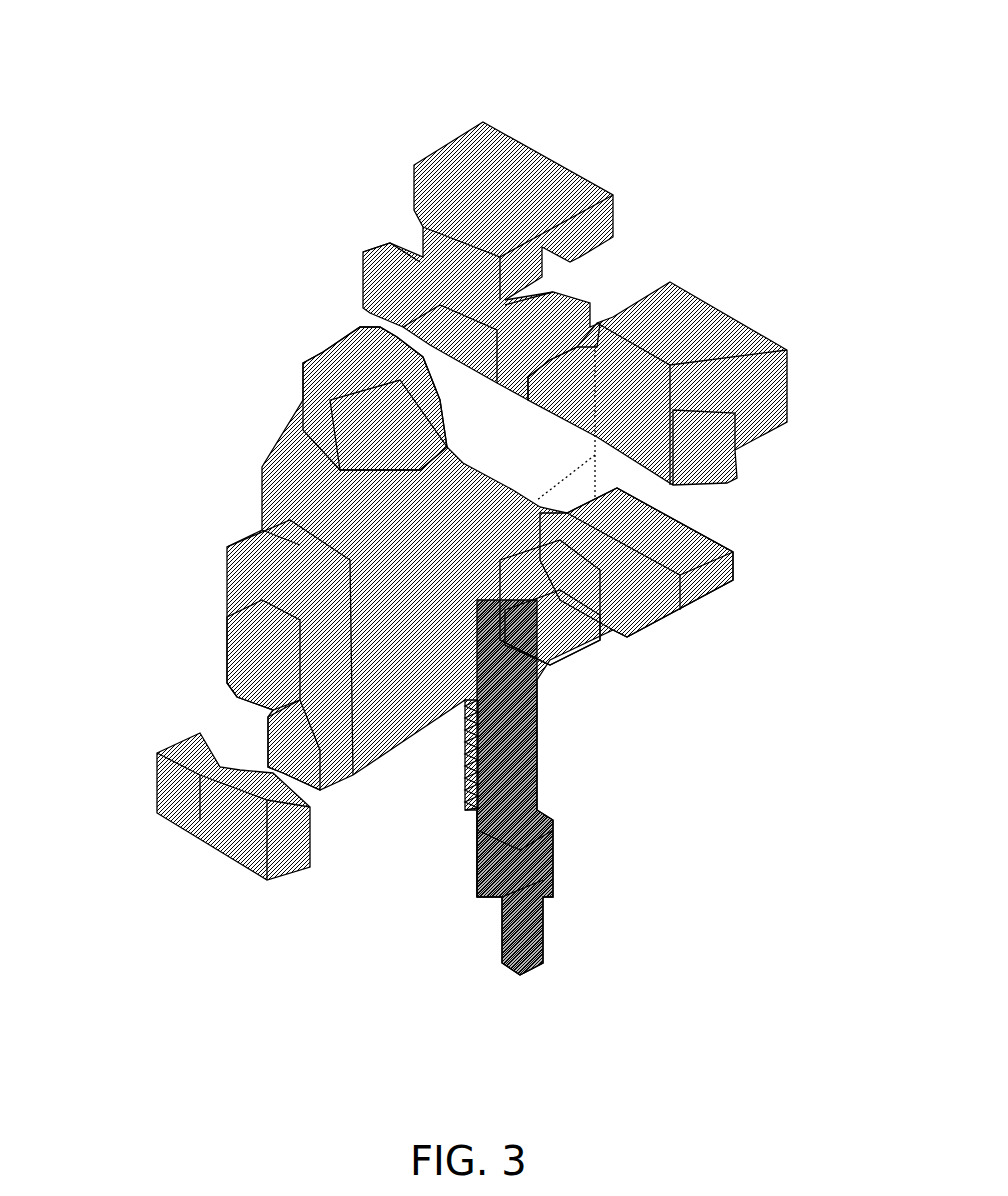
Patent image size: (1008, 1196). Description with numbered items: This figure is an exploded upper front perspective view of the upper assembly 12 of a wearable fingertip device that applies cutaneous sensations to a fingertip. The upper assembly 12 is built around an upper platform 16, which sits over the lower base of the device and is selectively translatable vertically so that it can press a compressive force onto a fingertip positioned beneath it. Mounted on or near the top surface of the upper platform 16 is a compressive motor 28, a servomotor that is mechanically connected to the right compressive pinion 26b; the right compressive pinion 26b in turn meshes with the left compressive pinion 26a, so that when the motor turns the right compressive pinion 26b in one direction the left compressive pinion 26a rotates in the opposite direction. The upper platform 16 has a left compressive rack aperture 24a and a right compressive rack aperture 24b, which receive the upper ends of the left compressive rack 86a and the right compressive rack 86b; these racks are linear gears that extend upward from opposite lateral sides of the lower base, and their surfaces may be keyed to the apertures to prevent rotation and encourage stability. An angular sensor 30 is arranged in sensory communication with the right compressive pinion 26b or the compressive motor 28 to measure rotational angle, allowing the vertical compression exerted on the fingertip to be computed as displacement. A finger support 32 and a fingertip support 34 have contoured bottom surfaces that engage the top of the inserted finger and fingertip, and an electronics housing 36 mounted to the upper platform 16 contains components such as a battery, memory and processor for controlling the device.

The upper assembly 12 is at (786, 76).
The upper platform 16 is at (222, 560).
The left compressive rack aperture 24a is at (297, 458).
The right compressive rack aperture 24b is at (530, 585).
The left compressive pinion 26a is at (320, 430).
The right compressive pinion 26b is at (553, 668).
The compressive motor 28 is at (733, 323).
The angular sensor 30 is at (230, 655).
The finger support 32 is at (755, 562).
The fingertip support 34 is at (160, 780).
The electronics housing 36 is at (550, 190).
The left compressive rack 86a is at (270, 740).
The right compressive rack 86b is at (530, 750).